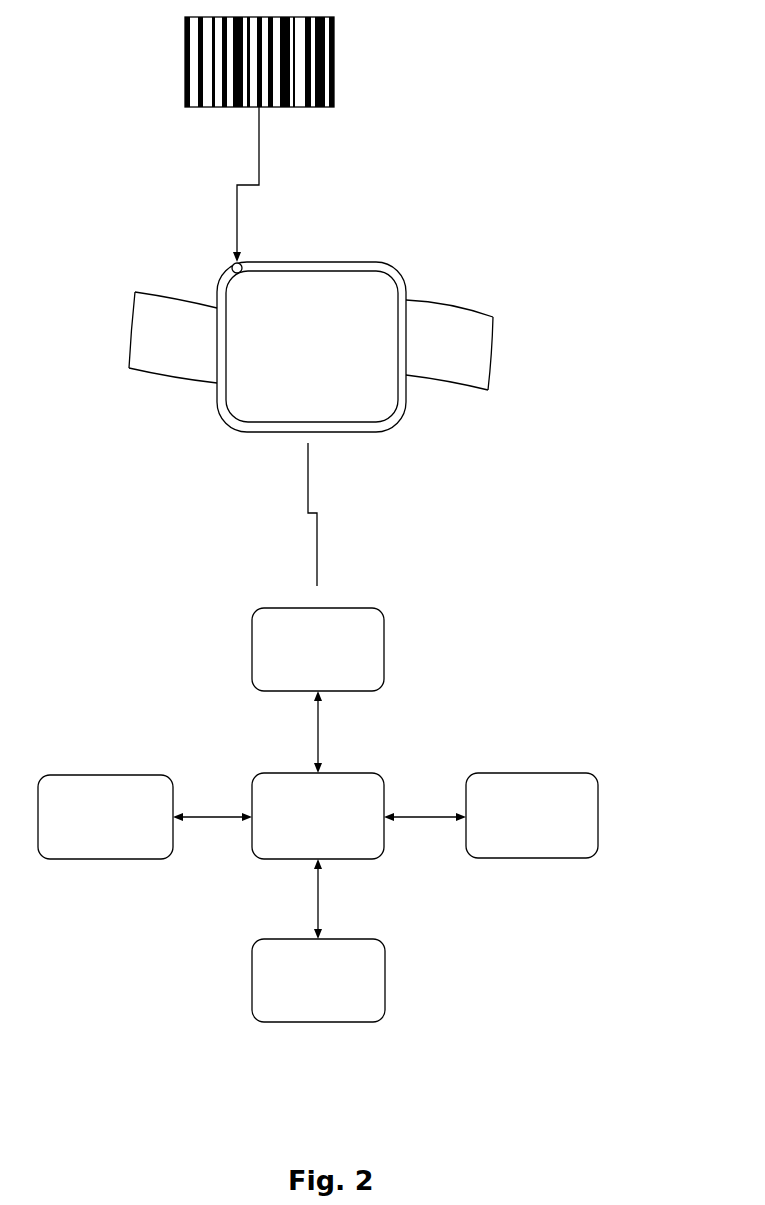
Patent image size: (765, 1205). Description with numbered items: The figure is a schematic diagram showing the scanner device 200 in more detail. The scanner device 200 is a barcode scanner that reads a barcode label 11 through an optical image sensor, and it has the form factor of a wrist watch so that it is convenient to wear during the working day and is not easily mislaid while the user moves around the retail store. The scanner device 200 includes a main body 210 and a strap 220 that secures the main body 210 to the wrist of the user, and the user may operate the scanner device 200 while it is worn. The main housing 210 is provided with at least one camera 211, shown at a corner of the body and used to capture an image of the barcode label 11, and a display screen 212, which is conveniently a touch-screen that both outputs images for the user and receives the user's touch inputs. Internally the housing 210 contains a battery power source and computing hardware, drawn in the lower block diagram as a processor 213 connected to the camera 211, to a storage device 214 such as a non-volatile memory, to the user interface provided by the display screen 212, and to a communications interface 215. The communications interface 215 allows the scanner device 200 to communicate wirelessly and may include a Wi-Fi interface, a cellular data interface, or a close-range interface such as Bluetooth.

The barcode label 11 is at (334, 58).
The scanner device 200 is at (488, 227).
The main body 210 is at (352, 263).
The camera 211 is at (246, 264).
The display screen 212 is at (372, 405).
The processor 213 is at (378, 785).
The storage device 214 is at (380, 984).
The communications interface 215 is at (173, 786).
The strap 220 is at (460, 305).